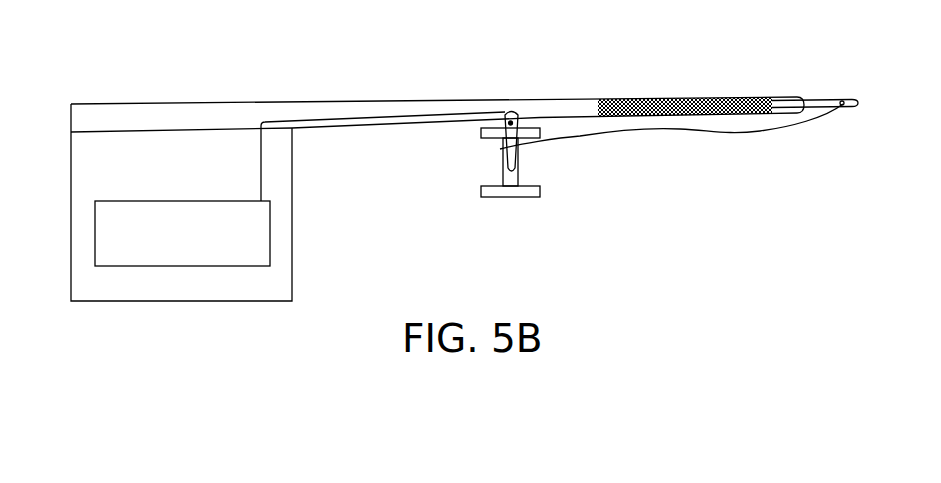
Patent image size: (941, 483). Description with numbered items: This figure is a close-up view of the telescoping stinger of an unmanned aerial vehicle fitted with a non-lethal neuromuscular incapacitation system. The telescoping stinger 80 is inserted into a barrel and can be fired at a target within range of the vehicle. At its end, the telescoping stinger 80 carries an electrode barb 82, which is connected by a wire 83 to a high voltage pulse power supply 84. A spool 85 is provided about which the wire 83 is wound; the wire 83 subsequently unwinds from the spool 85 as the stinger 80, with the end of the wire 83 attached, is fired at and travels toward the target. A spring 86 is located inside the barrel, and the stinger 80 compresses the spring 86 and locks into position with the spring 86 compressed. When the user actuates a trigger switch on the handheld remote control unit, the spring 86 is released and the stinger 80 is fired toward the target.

The telescoping stinger 80 is at (804, 96).
The electrode barb 82 is at (858, 116).
The wire 83 is at (758, 145).
The high voltage pulse power supply 84 is at (282, 239).
The spool 85 is at (506, 208).
The spring 86 is at (688, 96).